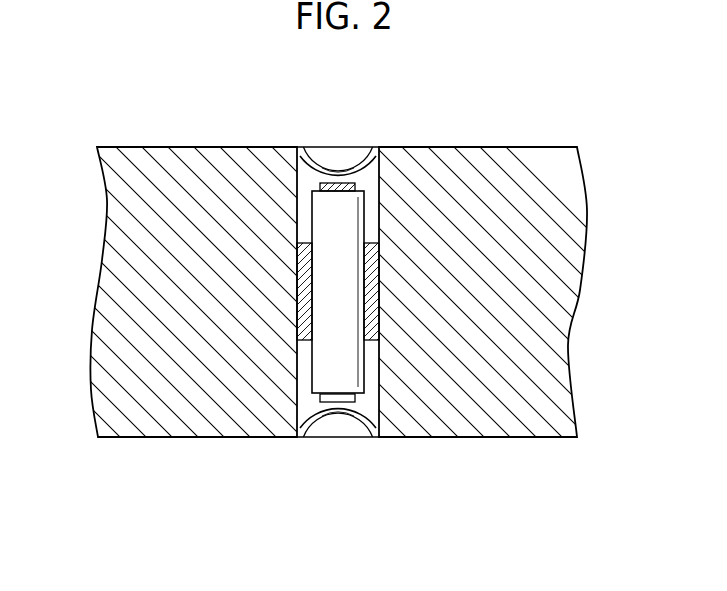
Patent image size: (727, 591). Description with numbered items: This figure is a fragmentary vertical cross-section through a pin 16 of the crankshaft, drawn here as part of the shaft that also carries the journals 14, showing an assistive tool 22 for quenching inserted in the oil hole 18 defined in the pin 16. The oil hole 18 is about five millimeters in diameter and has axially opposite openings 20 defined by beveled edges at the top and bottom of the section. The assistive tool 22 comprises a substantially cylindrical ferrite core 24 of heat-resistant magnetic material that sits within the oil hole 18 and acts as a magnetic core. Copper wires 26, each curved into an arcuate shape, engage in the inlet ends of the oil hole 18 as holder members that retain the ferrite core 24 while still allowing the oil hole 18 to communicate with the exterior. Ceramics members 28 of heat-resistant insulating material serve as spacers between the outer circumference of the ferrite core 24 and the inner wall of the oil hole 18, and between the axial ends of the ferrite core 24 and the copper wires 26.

The journal 14 is at (363, 254).
The pin 16 is at (177, 146).
The oil hole 18 is at (366, 220).
The opening 20 is at (334, 162).
The assistive tool 22 is at (405, 143).
The ferrite core 24 is at (357, 352).
The copper wire 26 is at (307, 154).
The ceramics member 28 is at (357, 188).